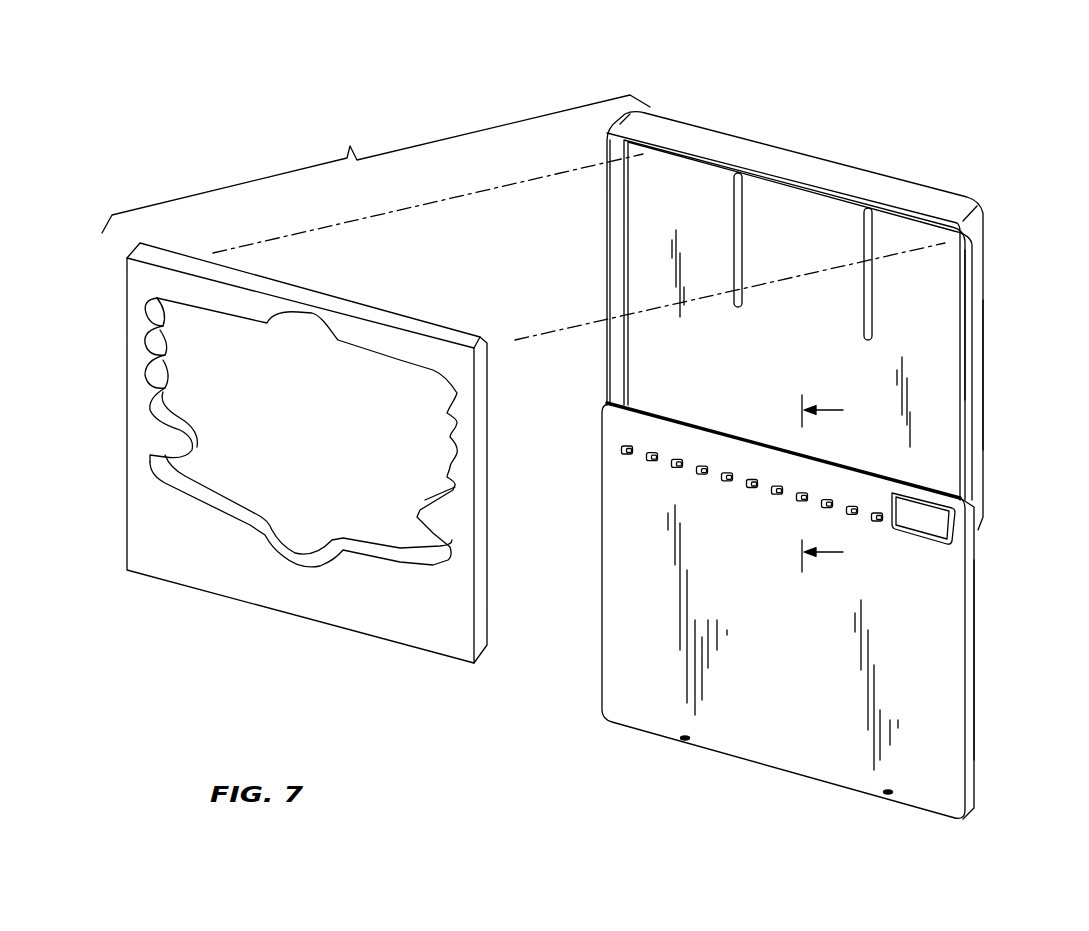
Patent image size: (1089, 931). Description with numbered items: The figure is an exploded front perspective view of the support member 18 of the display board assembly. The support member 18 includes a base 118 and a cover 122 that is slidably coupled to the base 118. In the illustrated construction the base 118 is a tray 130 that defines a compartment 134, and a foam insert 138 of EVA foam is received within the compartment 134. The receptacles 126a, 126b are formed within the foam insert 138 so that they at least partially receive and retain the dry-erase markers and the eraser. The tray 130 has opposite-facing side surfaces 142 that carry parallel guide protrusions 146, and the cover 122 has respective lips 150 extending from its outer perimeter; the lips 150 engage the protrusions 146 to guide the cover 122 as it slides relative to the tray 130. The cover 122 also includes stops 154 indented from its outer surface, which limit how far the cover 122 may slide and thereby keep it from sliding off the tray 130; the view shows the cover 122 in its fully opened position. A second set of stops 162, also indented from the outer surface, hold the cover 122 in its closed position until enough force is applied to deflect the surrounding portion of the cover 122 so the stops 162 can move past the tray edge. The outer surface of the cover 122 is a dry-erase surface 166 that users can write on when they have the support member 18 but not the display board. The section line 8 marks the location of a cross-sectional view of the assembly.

The support member 18 is at (523, 217).
The foam insert 138 is at (150, 525).
The receptacle 126a is at (158, 303).
The receptacle 126b is at (168, 458).
The base 118 is at (830, 160).
The tray 130 is at (707, 143).
The compartment 134 is at (930, 314).
The guide protrusion 146 is at (970, 260).
The side surface 142 is at (977, 390).
The cover 122 is at (942, 668).
The lip 150 is at (976, 568).
The dry-erase surface 166 is at (806, 650).
The stop 154 is at (753, 491).
The stop 162 is at (685, 736).
The section line 8- 8 is at (834, 483).